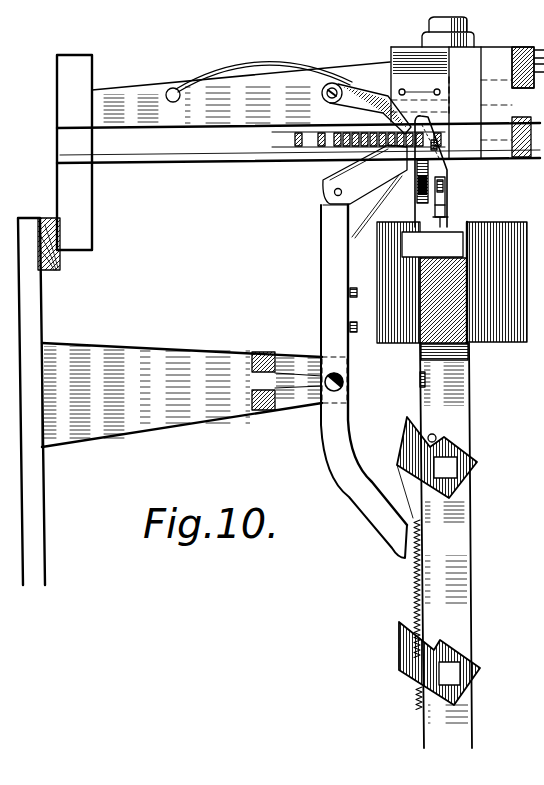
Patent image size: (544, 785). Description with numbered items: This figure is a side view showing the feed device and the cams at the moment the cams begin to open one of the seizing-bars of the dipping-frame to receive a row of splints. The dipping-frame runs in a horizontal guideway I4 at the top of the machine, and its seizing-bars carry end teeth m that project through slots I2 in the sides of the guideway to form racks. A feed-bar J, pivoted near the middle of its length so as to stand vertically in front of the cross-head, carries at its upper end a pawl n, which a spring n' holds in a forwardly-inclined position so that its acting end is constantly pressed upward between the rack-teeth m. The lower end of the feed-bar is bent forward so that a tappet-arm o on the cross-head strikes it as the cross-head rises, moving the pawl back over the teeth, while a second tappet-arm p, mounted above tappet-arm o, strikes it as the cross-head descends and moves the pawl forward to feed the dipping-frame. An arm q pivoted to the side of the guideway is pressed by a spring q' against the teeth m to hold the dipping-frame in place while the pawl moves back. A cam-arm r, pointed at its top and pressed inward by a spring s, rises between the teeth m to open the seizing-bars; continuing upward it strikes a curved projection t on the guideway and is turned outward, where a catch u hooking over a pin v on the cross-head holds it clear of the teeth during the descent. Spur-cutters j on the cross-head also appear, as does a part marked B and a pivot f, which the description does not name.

The slots I2 is at (298, 143).
The guideway I4 is at (241, 93).
The tooth m is at (295, 137).
The spring q' is at (259, 66).
The arm q is at (366, 108).
The inclined or curved projection t is at (461, 87).
The cam-arm r is at (431, 171).
The spring s is at (414, 181).
The catch u is at (450, 196).
The pin v is at (449, 212).
The pawl n is at (365, 174).
The spring n' is at (377, 206).
The feed-bar J is at (364, 381).
The rack bar B is at (452, 485).
The spur-cutters j is at (420, 378).
The tappet-arm p is at (405, 421).
The pivot pin f is at (436, 436).
The tappet-arm o is at (431, 663).